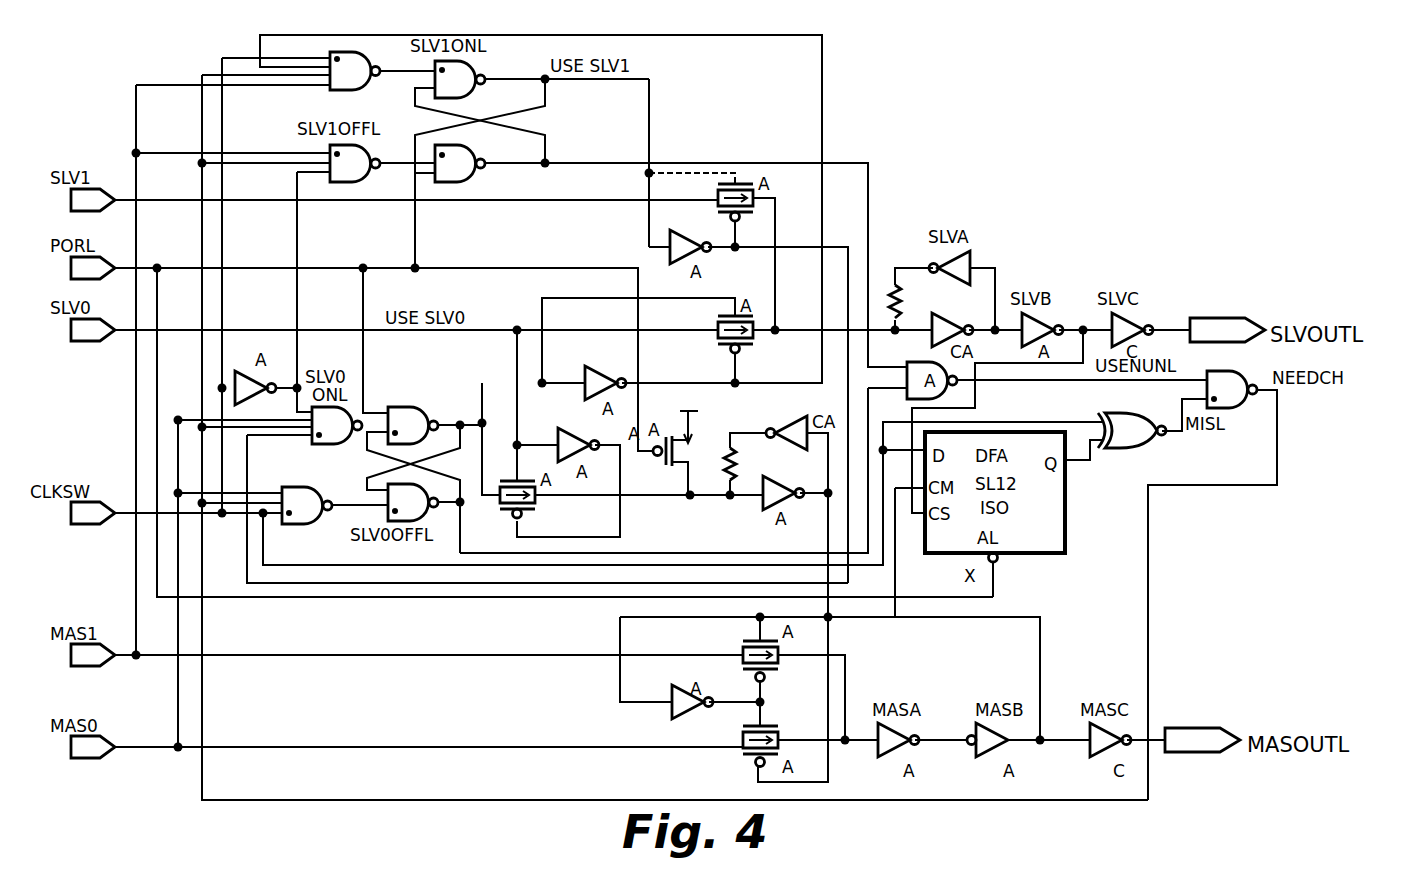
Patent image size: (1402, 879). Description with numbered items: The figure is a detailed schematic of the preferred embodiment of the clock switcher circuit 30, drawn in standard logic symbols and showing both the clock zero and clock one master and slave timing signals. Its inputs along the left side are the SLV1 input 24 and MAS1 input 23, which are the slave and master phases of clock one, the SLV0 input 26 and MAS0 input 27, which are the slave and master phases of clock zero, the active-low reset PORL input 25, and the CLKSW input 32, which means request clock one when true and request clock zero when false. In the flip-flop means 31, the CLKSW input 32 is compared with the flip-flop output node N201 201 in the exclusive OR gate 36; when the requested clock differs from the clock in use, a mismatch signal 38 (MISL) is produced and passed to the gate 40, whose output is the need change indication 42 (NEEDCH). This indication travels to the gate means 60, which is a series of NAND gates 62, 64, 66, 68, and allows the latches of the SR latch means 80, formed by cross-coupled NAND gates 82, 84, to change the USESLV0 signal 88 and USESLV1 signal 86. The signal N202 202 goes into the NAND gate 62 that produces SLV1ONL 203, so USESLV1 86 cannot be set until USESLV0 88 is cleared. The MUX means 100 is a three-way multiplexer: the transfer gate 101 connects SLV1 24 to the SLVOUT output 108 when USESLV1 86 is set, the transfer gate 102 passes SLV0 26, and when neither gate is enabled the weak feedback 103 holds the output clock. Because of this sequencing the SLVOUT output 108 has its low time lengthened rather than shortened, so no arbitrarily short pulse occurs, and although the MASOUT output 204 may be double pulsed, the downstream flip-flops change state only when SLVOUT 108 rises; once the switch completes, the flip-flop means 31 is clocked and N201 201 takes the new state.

The clock switcher circuit 30 is at (1050, 125).
The gate means 60 is at (360, 26).
The SR latch means 80 is at (480, 26).
The N202 signal 202 is at (258, 46).
The NAND gate 62 is at (333, 94).
The SLV1ONL signal 203 is at (404, 79).
The cross-coupled NAND gate 82 is at (468, 97).
The NAND gate 64 is at (366, 175).
The USESLV1 signal 86 is at (653, 131).
The transfer gate 101 is at (745, 181).
The SLV1 input 24 is at (122, 196).
The PORL input 25 is at (126, 264).
The SLV0 input 26 is at (122, 344).
The CLKSW input 32 is at (120, 521).
The MAS1 input 23 is at (120, 663).
The MAS0 input 27 is at (124, 756).
The MUX means 100 is at (793, 327).
The transfer gate 102 is at (745, 355).
The feedback 103 is at (962, 318).
The SLVOUT output 108 is at (1170, 325).
The USESLV0 signal 88 is at (500, 382).
The cross-coupled NAND gate 84 is at (430, 407).
The NAND gate 66 is at (322, 446).
The NAND gate 68 is at (306, 487).
The exclusive OR gate 36 is at (1144, 446).
The mismatch signal 38 is at (1172, 428).
The gate 40 is at (1262, 408).
The need change indication 42 is at (1281, 431).
The N201 signal 201 is at (1100, 462).
The flip-flop means 31 is at (1108, 620).
The MASOUT output 204 is at (1158, 732).